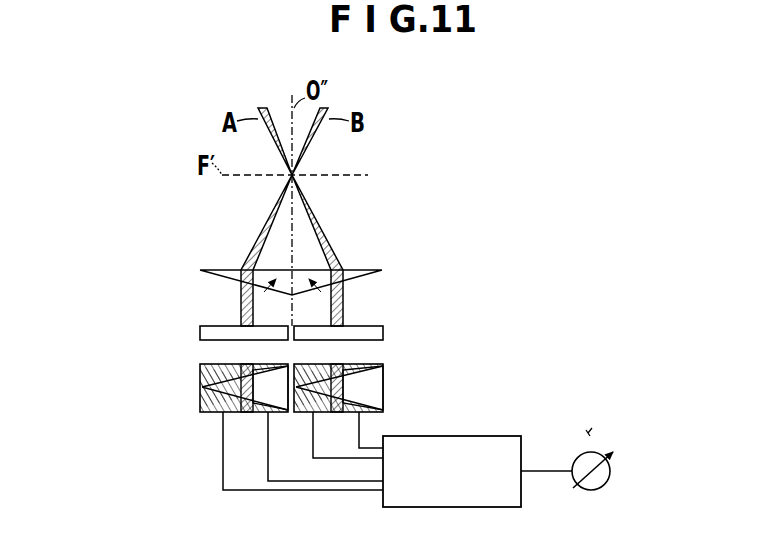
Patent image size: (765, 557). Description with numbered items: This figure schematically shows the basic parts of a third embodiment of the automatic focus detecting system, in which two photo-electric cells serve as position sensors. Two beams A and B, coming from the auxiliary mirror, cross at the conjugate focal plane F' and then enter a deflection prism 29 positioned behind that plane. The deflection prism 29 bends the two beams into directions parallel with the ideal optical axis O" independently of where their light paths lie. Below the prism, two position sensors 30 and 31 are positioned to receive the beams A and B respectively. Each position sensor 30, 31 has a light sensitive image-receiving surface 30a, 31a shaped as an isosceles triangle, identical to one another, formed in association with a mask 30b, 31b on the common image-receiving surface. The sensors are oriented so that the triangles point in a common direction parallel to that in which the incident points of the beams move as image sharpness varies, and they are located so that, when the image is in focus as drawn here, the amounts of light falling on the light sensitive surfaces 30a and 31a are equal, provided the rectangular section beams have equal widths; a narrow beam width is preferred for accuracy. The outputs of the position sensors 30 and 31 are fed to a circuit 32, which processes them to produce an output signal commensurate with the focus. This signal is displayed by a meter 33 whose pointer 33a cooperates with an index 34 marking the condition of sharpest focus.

The deflection prism 29 is at (318, 275).
The position sensor 30 is at (386, 367).
The light sensitive image-receiving surface 30a is at (375, 388).
The mask 30b is at (323, 380).
The position sensor 31 is at (199, 367).
The light sensitive image-receiving surface 31a is at (260, 394).
The mask 31b is at (210, 400).
The circuit 32 is at (438, 485).
The meter 33 is at (600, 482).
The pointer 33a is at (612, 457).
The index 34 is at (590, 433).